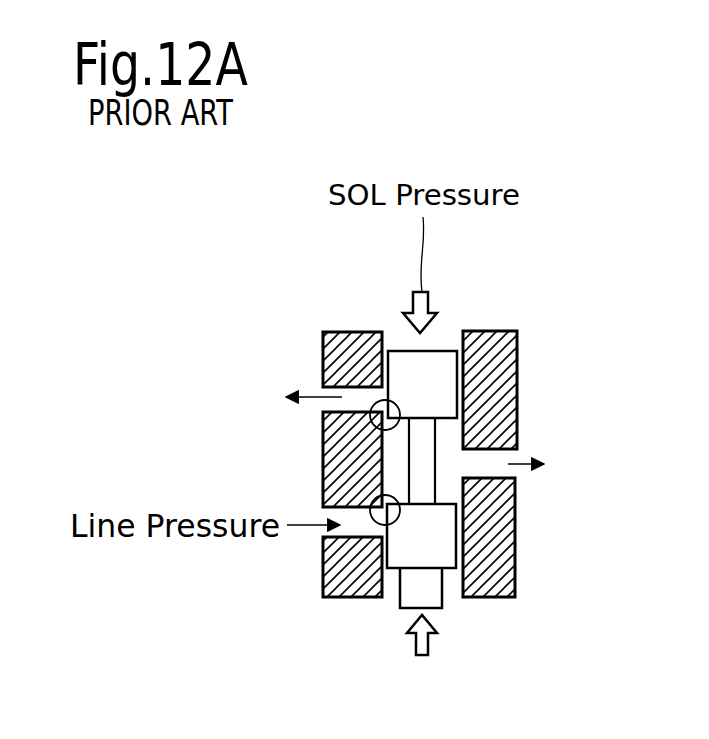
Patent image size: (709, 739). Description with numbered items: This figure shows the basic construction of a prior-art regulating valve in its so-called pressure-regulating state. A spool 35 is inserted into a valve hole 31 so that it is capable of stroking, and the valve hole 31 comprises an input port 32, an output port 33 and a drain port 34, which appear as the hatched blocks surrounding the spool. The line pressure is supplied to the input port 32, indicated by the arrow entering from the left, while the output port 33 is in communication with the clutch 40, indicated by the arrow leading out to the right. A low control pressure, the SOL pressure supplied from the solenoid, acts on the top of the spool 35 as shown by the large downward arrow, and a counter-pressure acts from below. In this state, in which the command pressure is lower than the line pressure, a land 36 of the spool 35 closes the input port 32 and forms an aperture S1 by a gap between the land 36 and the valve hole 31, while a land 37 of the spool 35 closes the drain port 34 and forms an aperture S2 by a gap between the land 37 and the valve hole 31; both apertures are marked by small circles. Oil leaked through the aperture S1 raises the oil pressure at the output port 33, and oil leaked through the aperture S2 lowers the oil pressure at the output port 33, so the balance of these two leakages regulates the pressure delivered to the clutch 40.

The valve hole 31 is at (456, 351).
The input port 32 is at (323, 537).
The output port 33 is at (513, 470).
The drain port 34 is at (323, 388).
The spool 35 is at (410, 587).
The land 36 is at (427, 557).
The land 37 is at (403, 351).
The clutch 40 is at (560, 464).
The aperture S1 is at (372, 514).
The aperture S2 is at (376, 403).